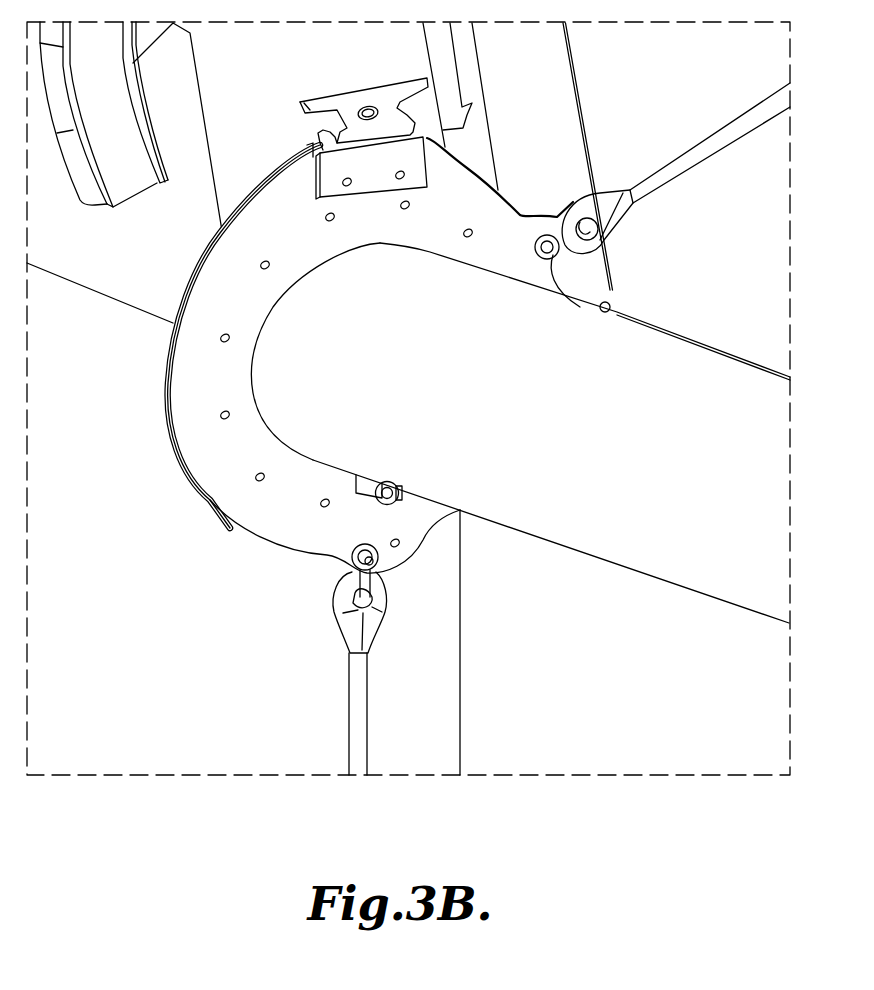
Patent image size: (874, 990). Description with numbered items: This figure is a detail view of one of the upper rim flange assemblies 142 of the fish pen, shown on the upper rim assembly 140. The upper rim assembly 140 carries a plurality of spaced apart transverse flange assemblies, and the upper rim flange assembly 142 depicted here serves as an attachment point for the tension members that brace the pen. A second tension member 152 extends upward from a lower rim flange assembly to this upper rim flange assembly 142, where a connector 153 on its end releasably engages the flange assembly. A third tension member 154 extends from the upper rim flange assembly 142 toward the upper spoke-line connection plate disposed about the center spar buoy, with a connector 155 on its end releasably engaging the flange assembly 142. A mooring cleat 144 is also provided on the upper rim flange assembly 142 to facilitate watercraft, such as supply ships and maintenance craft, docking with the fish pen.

The upper rim assembly 140 is at (603, 437).
The upper rim flange assembly 142 is at (204, 510).
The mooring cleat 144 is at (331, 118).
The second tension member 152 is at (349, 708).
The connector 153 is at (343, 620).
The third tension member 154 is at (722, 147).
The connector 155 is at (598, 198).